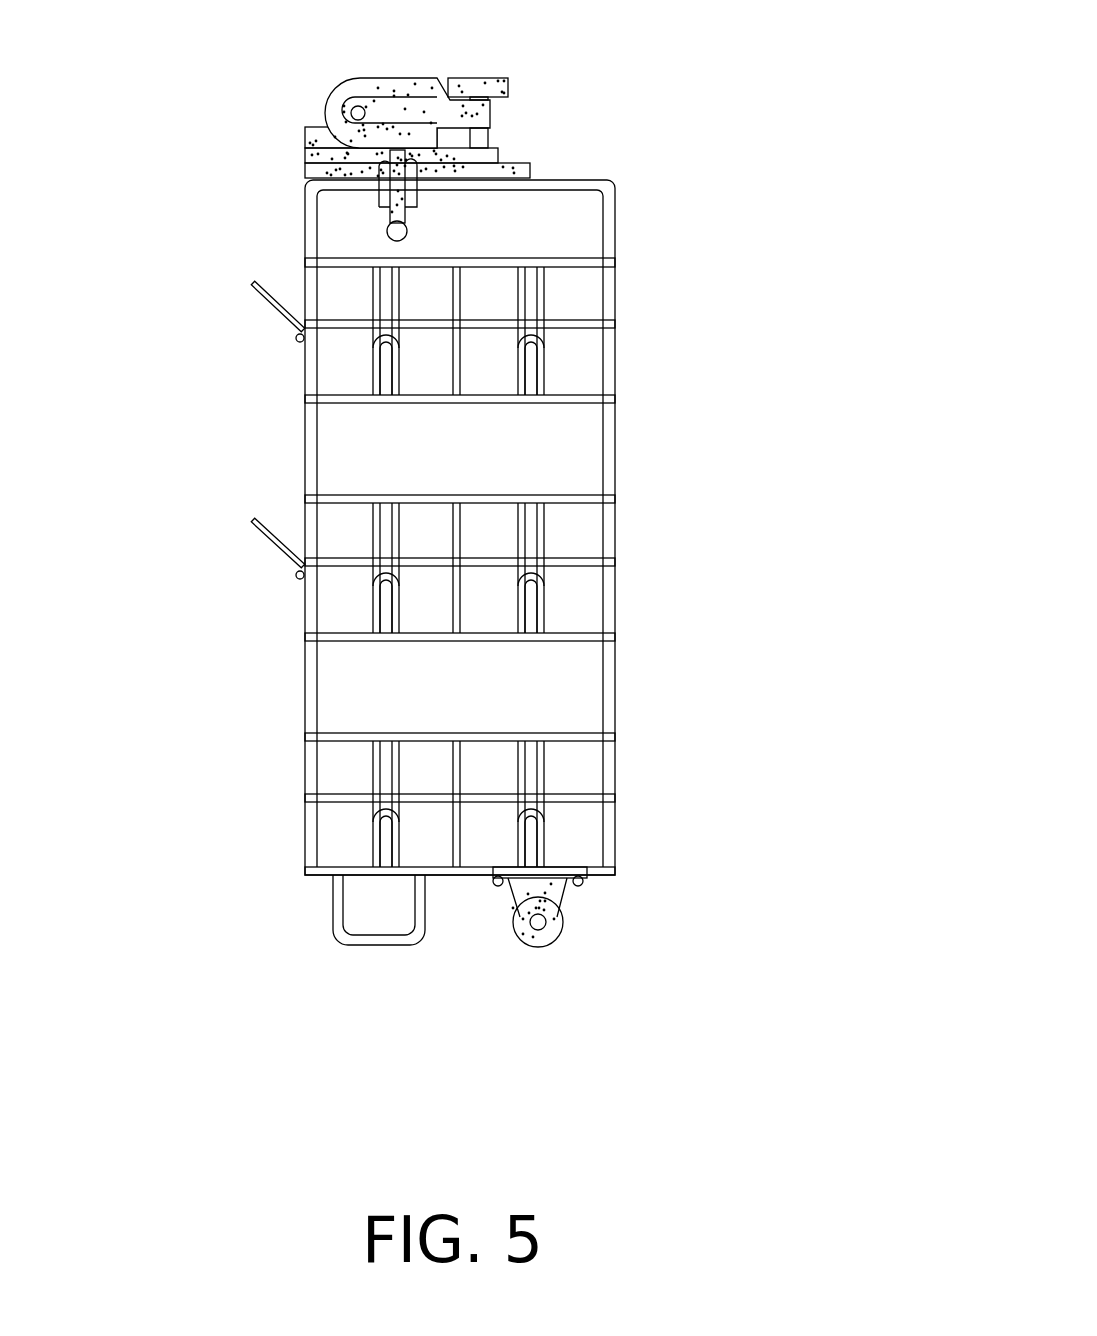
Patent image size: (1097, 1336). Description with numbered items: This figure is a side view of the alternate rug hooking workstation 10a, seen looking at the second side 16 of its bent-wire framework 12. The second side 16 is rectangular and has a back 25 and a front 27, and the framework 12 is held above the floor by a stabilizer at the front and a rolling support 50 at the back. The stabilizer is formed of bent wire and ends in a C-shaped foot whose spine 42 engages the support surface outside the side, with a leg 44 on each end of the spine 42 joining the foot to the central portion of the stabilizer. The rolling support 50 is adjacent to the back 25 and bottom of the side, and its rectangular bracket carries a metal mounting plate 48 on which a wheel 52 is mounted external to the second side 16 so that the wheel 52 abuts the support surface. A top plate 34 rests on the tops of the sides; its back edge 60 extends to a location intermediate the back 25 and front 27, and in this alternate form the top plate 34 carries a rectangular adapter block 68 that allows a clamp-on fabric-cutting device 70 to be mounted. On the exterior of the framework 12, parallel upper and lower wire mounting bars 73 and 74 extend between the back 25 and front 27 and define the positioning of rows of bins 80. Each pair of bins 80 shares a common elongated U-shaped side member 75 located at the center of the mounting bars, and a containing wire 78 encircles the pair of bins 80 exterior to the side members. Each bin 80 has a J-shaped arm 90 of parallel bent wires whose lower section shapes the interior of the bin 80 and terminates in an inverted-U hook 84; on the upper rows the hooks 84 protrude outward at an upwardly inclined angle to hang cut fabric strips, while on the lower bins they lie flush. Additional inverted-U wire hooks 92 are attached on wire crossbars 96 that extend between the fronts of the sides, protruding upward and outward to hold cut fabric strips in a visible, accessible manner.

The rug hooking workstation 10a is at (275, 235).
The framework 12 is at (628, 823).
The second side 16 is at (615, 215).
The back 25 is at (607, 677).
The front 27 is at (308, 670).
The top plate 34 is at (530, 163).
The spine 42 is at (390, 947).
The leg 44 is at (332, 908).
The mounting plate 48 is at (593, 868).
The rolling support 50 is at (497, 887).
The wheel 52 is at (540, 948).
The back edge 60 is at (532, 170).
The rectangular adapter block 68 is at (495, 147).
The clamp-on fabric-cutting device 70 is at (303, 155).
The upper wire mounting bar 73 is at (583, 730).
The lower wire mounting bar 74 is at (307, 872).
The common elongated U-shaped side member 75 is at (453, 812).
The containing wire 78 is at (372, 800).
The bin 80 is at (567, 547).
The hook 84 is at (373, 832).
The J-shaped arm 90 is at (547, 770).
The hook 92 is at (253, 283).
The wire crossbar 96 is at (295, 339).